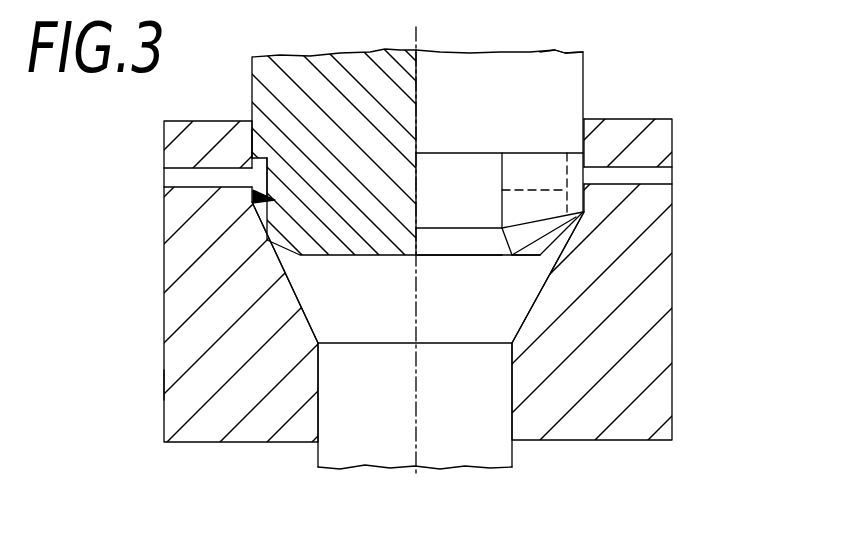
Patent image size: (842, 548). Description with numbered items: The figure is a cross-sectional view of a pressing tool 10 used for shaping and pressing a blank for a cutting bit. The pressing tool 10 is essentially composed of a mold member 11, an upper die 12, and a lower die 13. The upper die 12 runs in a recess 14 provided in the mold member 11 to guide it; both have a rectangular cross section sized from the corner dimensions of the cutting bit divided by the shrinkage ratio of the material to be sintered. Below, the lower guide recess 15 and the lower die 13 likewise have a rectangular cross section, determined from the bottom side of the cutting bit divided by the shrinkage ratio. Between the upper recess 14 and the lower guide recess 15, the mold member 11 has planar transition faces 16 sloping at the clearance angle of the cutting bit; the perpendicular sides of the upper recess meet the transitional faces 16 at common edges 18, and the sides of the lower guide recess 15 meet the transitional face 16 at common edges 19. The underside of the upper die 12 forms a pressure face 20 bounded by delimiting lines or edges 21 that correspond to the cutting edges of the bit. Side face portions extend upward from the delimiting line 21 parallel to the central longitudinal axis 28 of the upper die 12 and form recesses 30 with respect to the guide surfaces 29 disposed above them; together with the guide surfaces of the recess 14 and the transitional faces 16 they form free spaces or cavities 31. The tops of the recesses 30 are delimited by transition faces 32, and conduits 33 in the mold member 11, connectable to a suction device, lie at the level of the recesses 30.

The pressing tool 10 is at (140, 381).
The mold member 11 is at (653, 342).
The upper die 12 is at (572, 92).
The lower die 13 is at (488, 443).
The recess 14 is at (583, 128).
The lower guide recess 15 is at (319, 380).
The planar transition faces 16 is at (524, 322).
The common edges 18 is at (270, 195).
The common edges 19 is at (322, 337).
The pressure face 20 is at (437, 240).
The delimiting lines or edges 21 is at (437, 230).
The central longitudinal axis 28 is at (420, 36).
The guide surfaces 29 is at (587, 68).
The recesses 30 is at (502, 190).
The free spaces or cavities 31 is at (250, 158).
The transition faces 32 is at (253, 152).
The conduits 33 is at (167, 177).